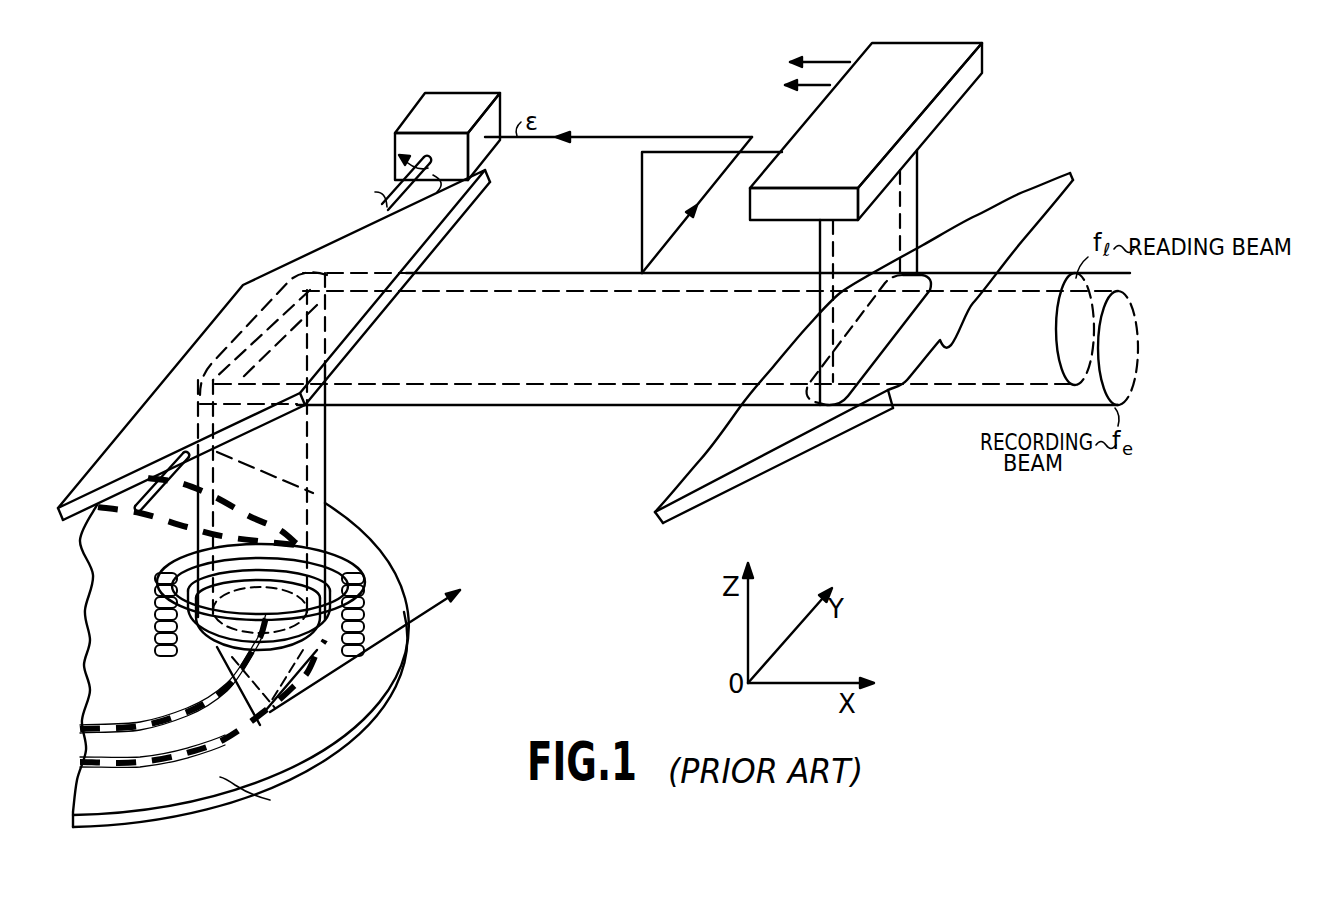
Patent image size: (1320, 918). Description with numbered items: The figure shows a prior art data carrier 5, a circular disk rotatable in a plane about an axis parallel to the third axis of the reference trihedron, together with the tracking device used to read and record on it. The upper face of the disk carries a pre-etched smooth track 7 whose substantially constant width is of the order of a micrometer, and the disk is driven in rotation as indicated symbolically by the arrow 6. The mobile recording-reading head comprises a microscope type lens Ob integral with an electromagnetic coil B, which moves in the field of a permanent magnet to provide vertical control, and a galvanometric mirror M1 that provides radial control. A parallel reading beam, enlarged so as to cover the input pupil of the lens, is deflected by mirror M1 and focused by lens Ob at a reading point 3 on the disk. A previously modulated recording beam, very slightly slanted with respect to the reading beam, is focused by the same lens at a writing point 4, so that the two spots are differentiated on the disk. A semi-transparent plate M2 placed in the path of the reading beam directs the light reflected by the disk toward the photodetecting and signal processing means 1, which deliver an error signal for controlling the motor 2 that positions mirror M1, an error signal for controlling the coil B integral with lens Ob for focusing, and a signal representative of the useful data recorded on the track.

The photodetecting and signal processing means 1 is at (960, 86).
The motor 2 is at (412, 114).
The reading spot 3 is at (246, 698).
The writing spot 4 is at (303, 690).
The data carrier 5 is at (449, 705).
The arrow 6 is at (427, 614).
The pre-etched track 7 is at (165, 727).
The galvanometric mirror M1 is at (197, 350).
The semi-transparent plate M2 is at (1023, 193).
The electromagnetic coil B is at (340, 568).
The microscope type lens Ob is at (350, 600).